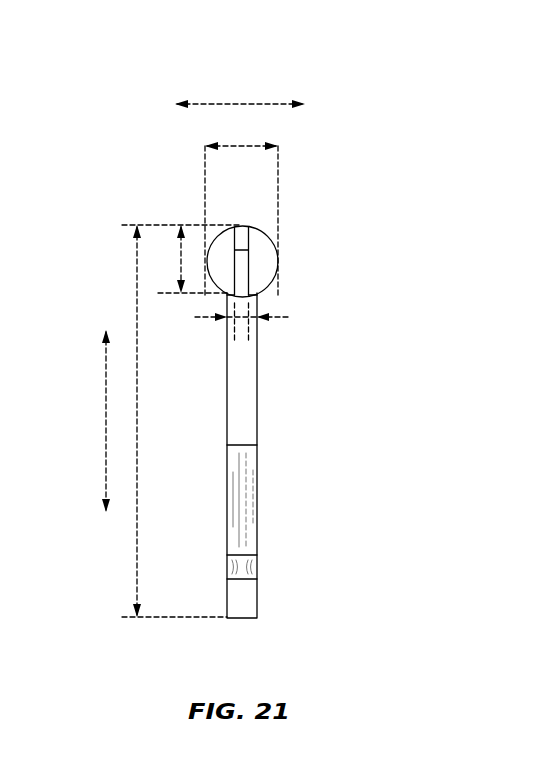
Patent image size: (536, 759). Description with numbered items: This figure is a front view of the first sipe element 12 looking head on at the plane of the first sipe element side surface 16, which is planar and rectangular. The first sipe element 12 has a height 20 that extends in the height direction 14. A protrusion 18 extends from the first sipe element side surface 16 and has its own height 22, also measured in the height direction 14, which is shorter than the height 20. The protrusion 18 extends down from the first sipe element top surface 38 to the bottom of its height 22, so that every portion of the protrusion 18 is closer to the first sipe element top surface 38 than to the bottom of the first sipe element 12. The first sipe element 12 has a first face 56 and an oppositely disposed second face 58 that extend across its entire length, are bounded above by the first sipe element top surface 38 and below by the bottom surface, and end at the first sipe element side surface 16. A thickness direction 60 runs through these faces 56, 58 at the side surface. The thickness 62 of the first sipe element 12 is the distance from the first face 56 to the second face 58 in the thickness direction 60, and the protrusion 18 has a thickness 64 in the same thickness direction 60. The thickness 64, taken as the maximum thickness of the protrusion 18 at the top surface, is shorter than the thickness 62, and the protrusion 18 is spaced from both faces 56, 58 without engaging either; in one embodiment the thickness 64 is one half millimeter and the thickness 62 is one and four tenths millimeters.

The first sipe element 12 is at (368, 254).
The height direction 14 is at (105, 420).
The first sipe element side surface 16 is at (251, 390).
The protrusion 18 is at (245, 273).
The height 20 is at (138, 420).
The height 22 is at (178, 262).
The first sipe element top surface 38 is at (241, 216).
The first face 56 is at (293, 272).
The second face 58 is at (208, 290).
The thickness direction 60 is at (240, 104).
The thickness 62 is at (242, 143).
The thickness 64 is at (272, 318).